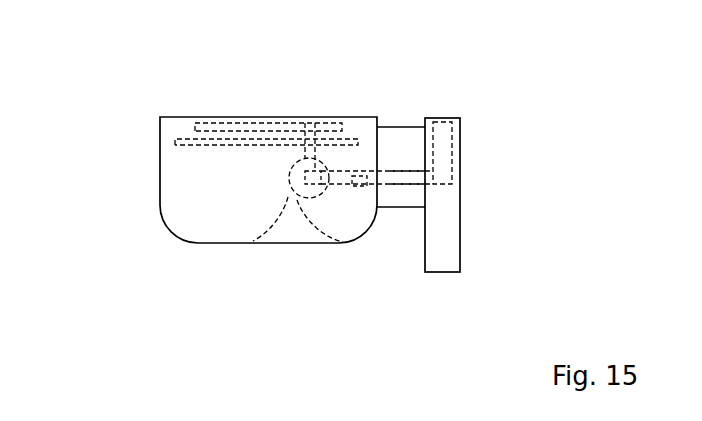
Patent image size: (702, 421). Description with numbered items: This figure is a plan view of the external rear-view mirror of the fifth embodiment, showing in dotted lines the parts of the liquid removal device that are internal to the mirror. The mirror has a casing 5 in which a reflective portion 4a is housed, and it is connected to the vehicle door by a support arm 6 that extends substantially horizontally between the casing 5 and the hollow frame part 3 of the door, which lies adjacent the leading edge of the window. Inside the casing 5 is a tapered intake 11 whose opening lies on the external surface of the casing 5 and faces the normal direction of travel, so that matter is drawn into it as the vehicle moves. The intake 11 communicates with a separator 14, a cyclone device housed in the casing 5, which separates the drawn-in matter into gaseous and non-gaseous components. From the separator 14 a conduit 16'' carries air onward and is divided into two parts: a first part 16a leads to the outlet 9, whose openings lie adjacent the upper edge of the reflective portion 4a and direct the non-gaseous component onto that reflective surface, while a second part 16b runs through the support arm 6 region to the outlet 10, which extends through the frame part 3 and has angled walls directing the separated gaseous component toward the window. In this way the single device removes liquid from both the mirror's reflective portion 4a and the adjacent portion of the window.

The frame part 3 is at (450, 257).
The reflective portion 4a is at (187, 140).
The casing 5 is at (188, 200).
The support arm 6 is at (400, 147).
The outlet 9 is at (235, 127).
The outlet 10 is at (443, 153).
The intake 11 is at (283, 228).
The separator 14 is at (322, 163).
The first part of conduit 16a is at (303, 150).
The second part of conduit 16b is at (383, 178).
The conduit 16'' is at (426, 279).